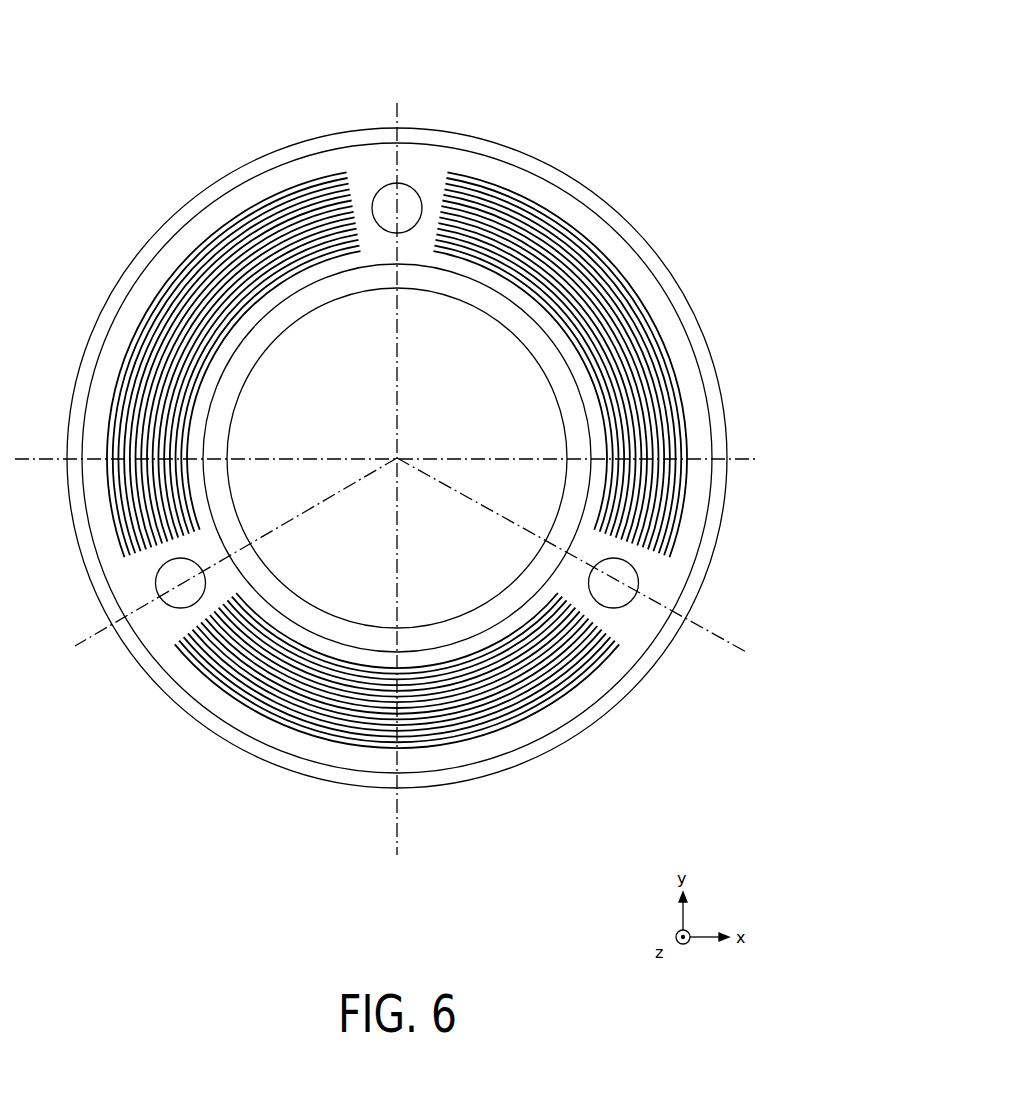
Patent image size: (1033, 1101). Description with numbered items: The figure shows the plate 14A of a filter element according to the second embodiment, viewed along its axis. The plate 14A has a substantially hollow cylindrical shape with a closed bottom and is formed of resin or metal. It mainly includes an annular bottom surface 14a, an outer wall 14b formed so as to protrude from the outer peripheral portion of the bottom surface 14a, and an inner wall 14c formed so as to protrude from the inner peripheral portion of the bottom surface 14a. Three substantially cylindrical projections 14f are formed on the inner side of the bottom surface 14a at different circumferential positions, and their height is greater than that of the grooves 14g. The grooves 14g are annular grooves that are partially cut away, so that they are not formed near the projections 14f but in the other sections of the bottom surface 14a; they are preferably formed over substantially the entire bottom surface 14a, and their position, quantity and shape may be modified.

The plate 14A is at (627, 93).
The bottom surface 14a is at (550, 717).
The outer wall 14b is at (653, 260).
The inner wall 14c is at (553, 368).
The projection 14f is at (617, 592).
The groove 14g is at (683, 497).